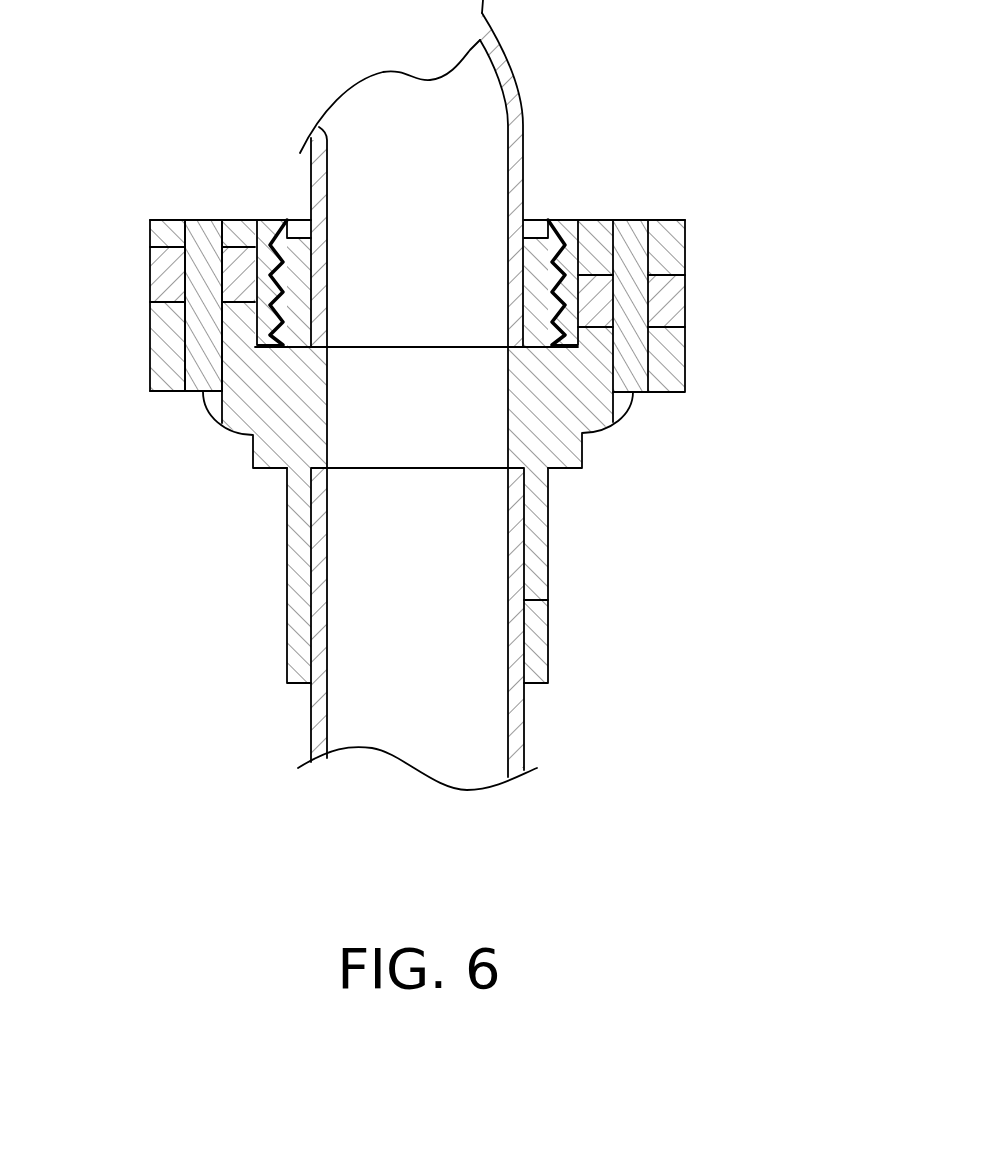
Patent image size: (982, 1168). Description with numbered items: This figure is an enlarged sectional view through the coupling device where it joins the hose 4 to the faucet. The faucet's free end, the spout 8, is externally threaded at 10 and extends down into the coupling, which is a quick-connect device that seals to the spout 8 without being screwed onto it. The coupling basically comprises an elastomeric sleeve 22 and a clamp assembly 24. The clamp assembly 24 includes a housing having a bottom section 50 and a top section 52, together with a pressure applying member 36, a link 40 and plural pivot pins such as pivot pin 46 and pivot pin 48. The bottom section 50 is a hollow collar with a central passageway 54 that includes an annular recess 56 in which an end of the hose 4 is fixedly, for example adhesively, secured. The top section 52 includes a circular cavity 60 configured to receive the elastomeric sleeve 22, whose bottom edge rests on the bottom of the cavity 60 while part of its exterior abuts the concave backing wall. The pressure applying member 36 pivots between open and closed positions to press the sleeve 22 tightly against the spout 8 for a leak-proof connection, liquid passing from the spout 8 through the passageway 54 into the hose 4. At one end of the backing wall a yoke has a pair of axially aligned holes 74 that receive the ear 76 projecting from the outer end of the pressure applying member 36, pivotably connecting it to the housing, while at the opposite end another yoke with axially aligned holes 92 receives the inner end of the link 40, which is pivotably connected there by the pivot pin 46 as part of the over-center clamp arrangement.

The hose 4 is at (525, 747).
The spout 8 is at (508, 57).
The external thread 10 is at (563, 292).
The elastomeric sleeve 22 is at (563, 205).
The clamp assembly 24 is at (686, 209).
The pressure applying member 36 is at (598, 308).
The link 40 is at (163, 267).
The pivot pin 46 is at (200, 218).
The pivot pin 48 is at (630, 230).
The bottom section 50 is at (548, 635).
The top section 52 is at (592, 418).
The central passageway 54 is at (510, 422).
The annular recess 56 is at (547, 600).
The circular cavity 60 is at (578, 243).
The axially aligned holes 74 is at (650, 247).
The ear 76 is at (673, 300).
The axially aligned holes 92 is at (177, 230).